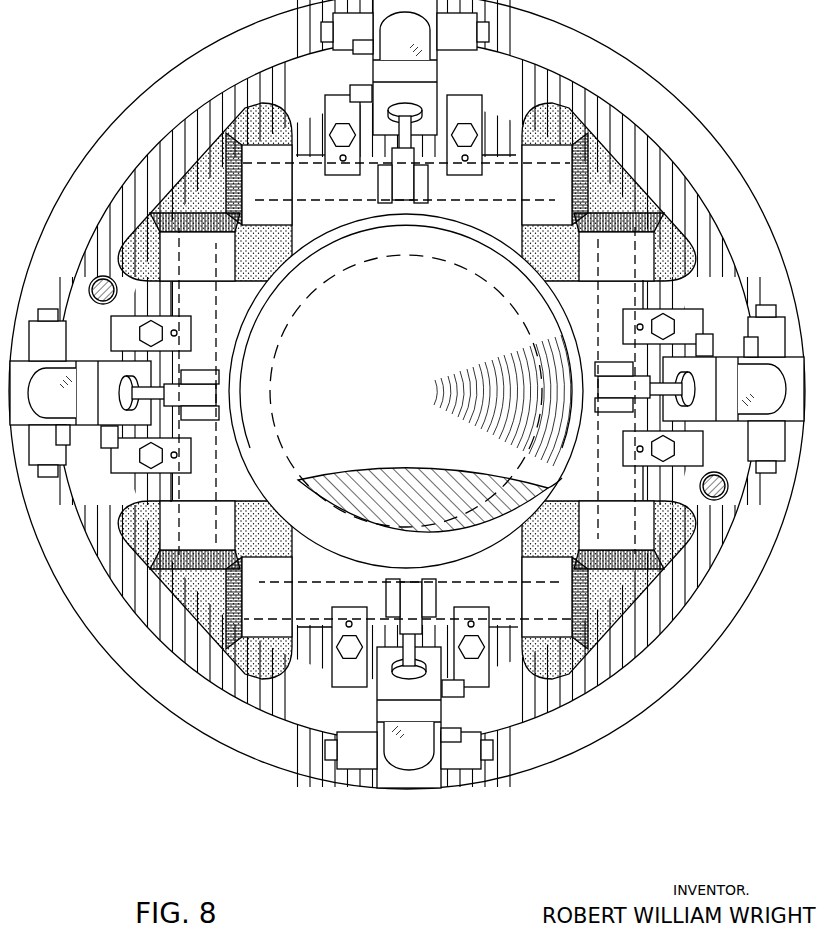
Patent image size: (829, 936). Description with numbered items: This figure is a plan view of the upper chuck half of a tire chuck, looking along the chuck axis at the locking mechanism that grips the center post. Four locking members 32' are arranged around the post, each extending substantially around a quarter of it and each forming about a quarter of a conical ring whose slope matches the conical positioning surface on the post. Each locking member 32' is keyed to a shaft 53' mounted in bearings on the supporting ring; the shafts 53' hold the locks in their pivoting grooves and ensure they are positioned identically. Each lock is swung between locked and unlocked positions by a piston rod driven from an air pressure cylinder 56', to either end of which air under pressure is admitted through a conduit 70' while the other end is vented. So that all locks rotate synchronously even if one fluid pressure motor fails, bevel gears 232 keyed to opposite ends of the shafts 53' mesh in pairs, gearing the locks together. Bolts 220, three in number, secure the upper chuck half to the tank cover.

The bevel gears 232 is at (288, 191).
The locking members 32' is at (411, 388).
The shaft 53' is at (431, 398).
The air pressure cylinder 56' is at (407, 394).
The conduit 70' is at (407, 392).
The bolts 220 is at (92, 288).